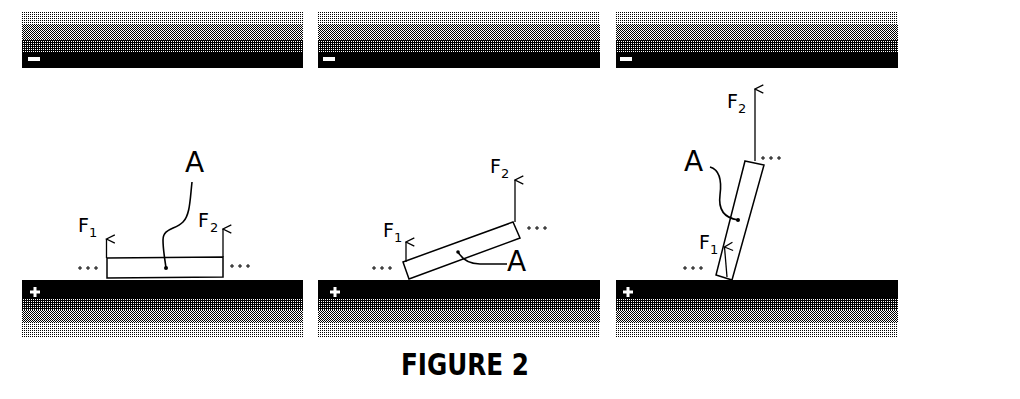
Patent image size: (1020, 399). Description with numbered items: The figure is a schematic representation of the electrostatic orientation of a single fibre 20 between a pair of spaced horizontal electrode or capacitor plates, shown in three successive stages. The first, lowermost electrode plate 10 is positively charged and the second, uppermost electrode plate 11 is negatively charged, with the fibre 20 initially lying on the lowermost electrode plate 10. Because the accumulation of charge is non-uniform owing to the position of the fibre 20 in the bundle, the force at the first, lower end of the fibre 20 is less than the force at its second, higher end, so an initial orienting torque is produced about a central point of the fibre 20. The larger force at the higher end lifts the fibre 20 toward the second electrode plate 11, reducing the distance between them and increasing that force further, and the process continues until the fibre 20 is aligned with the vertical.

The first electrode plate 10 is at (176, 345).
The second electrode plate 11 is at (174, 26).
The fibre 20 is at (137, 258).